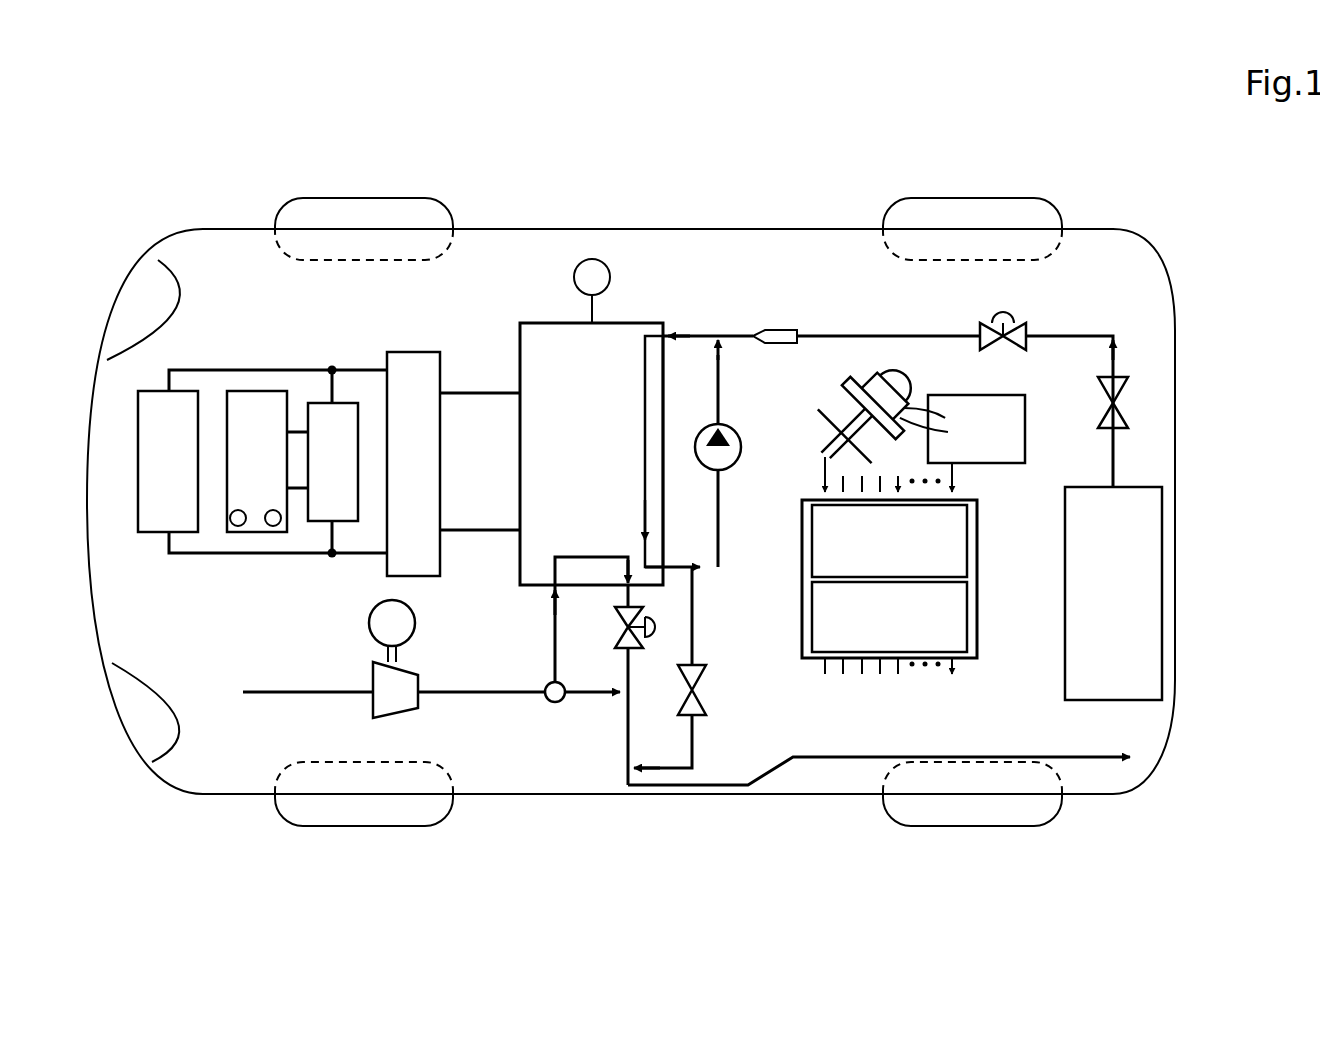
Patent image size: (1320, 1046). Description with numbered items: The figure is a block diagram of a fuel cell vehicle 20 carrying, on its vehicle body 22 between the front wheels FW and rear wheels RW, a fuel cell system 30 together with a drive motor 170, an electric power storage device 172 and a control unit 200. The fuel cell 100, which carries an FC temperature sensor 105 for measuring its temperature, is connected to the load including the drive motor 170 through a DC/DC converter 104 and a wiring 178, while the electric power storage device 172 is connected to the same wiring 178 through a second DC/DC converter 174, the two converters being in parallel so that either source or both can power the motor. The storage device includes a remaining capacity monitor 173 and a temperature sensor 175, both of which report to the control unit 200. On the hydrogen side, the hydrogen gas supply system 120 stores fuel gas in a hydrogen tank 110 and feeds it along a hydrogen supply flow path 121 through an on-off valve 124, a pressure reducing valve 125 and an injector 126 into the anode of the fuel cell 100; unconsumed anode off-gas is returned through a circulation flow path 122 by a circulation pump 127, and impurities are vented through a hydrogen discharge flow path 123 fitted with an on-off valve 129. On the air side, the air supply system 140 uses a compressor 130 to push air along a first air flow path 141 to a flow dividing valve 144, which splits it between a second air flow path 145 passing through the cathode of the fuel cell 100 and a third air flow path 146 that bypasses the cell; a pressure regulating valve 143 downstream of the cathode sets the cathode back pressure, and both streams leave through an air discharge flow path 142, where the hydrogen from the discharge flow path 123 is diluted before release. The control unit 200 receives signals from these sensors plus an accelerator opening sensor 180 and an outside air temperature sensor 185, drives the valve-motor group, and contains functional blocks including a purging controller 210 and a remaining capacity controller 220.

The fuel cell vehicle 20 is at (712, 190).
The vehicle body 22 is at (632, 229).
The fuel cell system 30 is at (713, 285).
The fuel cell 100 is at (663, 330).
The DC/DC converter 104 is at (412, 352).
The FC temperature sensor 105 is at (610, 275).
The hydrogen tank 110 is at (1118, 487).
The hydrogen gas supply system 120 is at (1142, 302).
The hydrogen supply flow path 121 is at (825, 336).
The circulation flow path 122 is at (720, 543).
The hydrogen discharge flow path 123 is at (694, 630).
The on-off valve 124 is at (1106, 410).
The pressure reducing valve 125 is at (1030, 325).
The injector 126 is at (782, 330).
The circulation pump 127 is at (731, 466).
The on-off valve 129 is at (706, 703).
The compressor 130 is at (372, 708).
The air supply system 140 is at (237, 638).
The first air flow path 141 is at (285, 692).
The air discharge flow path 142 is at (812, 757).
The pressure regulating valve 143 is at (618, 638).
The flow dividing valve 144 is at (552, 704).
The second air flow path 145 is at (553, 632).
The third air flow path 146 is at (580, 700).
The drive motor 170 is at (178, 372).
The electric power storage device 172 is at (237, 391).
The remaining capacity monitor 173 is at (238, 527).
The DC/DC converter 174 is at (315, 403).
The temperature sensor 175 is at (273, 527).
The wiring 178 is at (190, 553).
The accelerator opening sensor 180 is at (845, 385).
The outside air temperature sensor 185 is at (963, 395).
The control unit 200 is at (970, 500).
The purging controller 210 is at (967, 542).
The remaining capacity controller 220 is at (967, 617).
The front wheel FW is at (424, 198).
The rear wheel RW is at (1032, 198).